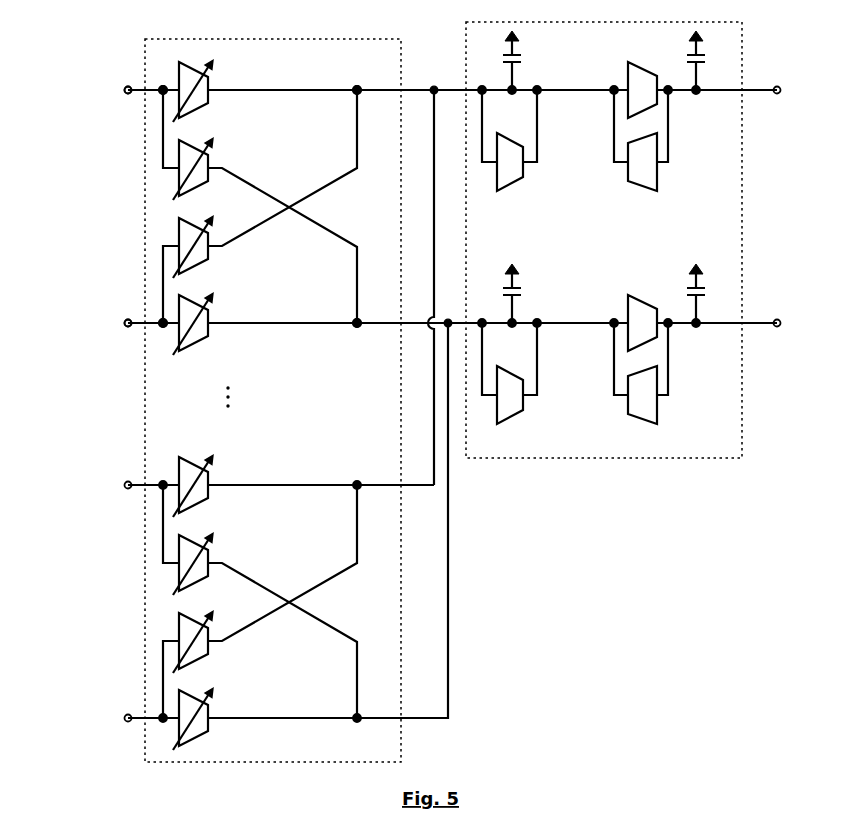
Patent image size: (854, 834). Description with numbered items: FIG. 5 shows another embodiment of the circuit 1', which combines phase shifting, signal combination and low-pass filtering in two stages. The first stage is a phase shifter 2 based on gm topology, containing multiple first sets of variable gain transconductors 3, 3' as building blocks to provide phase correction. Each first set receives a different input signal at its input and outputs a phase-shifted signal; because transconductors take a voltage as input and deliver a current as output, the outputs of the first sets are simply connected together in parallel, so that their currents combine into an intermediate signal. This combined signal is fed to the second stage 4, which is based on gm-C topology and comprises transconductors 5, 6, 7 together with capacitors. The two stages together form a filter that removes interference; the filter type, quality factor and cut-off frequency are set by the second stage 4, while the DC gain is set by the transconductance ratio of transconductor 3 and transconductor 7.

The circuit 1' is at (412, 381).
The phase shifter 2 is at (263, 389).
The variable gain transconductor 3 is at (193, 398).
The variable gain transconductor 3' is at (193, 398).
The second stage 4 is at (604, 229).
The transconductor 5 is at (510, 278).
The transconductor 6 is at (642, 206).
The transconductor 7 is at (642, 278).